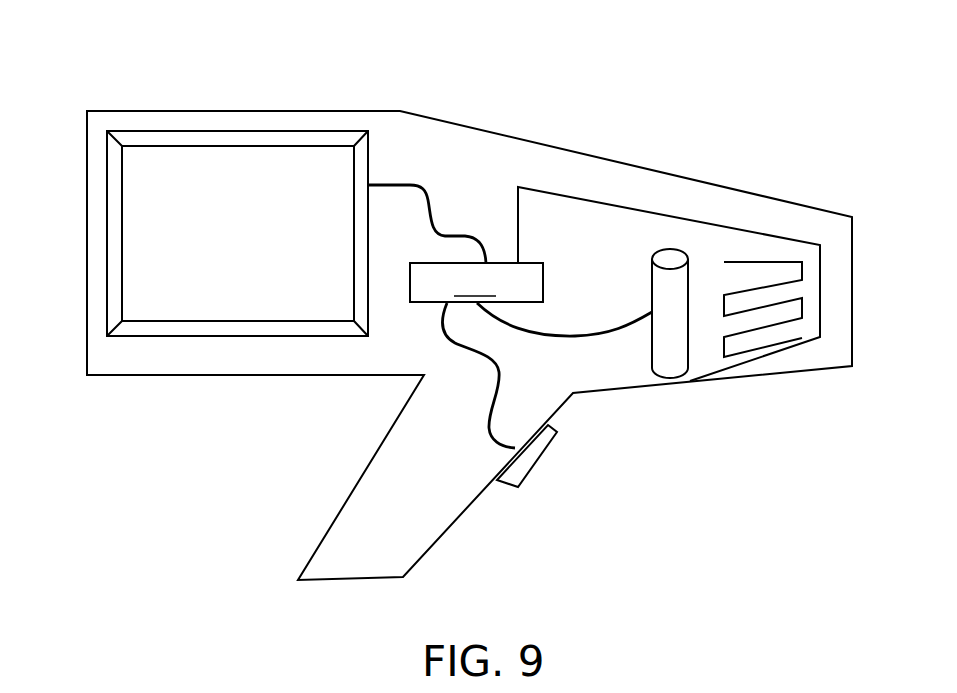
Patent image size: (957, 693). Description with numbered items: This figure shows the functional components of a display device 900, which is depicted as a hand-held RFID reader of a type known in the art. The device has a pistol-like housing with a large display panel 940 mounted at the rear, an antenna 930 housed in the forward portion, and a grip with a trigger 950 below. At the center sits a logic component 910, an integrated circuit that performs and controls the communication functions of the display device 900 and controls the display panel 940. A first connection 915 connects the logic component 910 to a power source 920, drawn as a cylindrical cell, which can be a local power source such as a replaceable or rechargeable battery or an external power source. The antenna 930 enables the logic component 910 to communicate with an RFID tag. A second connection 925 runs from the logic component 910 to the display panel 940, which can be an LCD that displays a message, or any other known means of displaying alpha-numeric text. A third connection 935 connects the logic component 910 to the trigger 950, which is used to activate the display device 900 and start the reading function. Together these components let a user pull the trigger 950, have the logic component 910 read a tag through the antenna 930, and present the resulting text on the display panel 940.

The display device 900 is at (469, 319).
The logic component 910 is at (476, 282).
The first connection 915 is at (573, 337).
The power source 920 is at (656, 285).
The second connection 925 is at (428, 194).
The antenna 930 is at (727, 223).
The third connection 935 is at (497, 388).
The display panel 940 is at (234, 137).
The trigger 950 is at (528, 467).